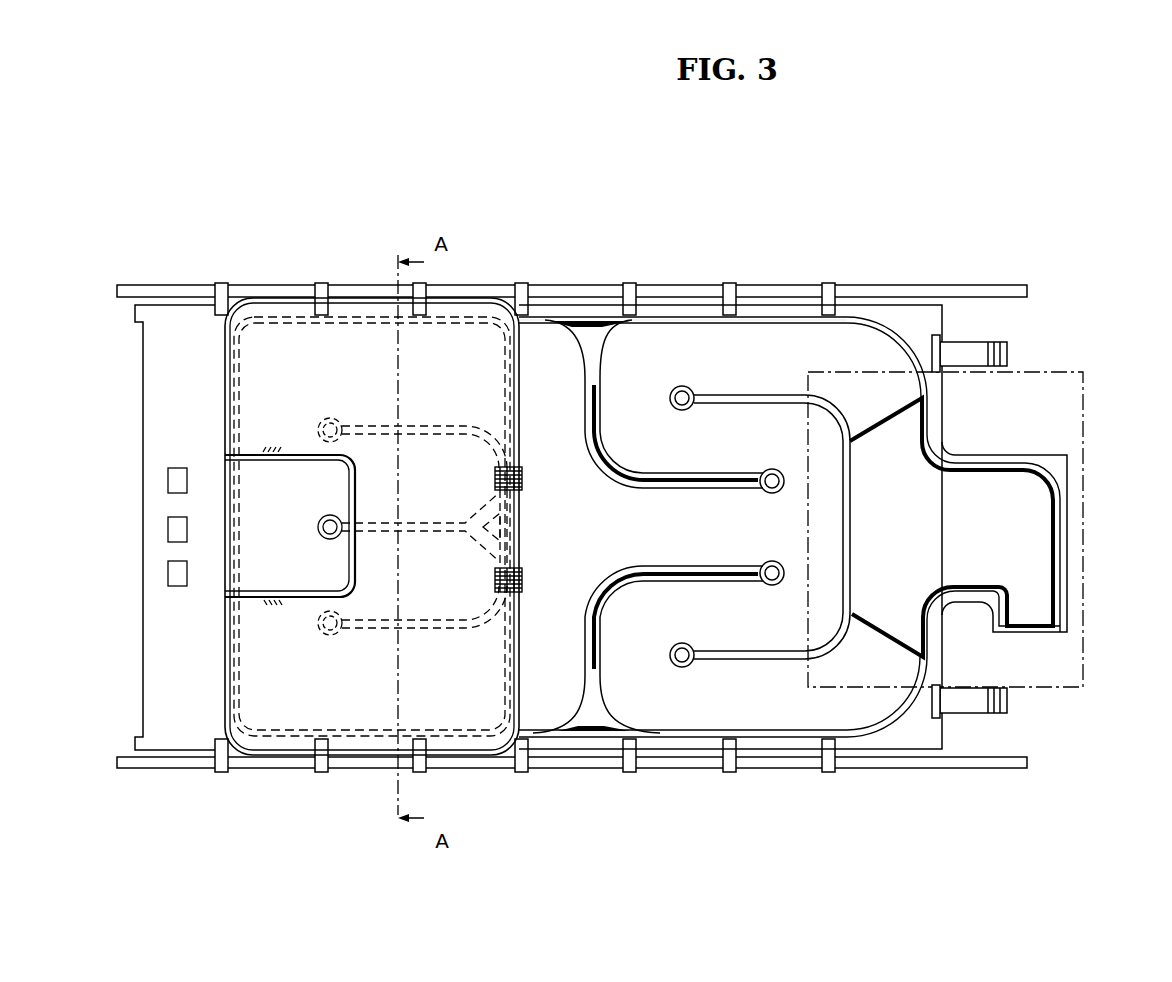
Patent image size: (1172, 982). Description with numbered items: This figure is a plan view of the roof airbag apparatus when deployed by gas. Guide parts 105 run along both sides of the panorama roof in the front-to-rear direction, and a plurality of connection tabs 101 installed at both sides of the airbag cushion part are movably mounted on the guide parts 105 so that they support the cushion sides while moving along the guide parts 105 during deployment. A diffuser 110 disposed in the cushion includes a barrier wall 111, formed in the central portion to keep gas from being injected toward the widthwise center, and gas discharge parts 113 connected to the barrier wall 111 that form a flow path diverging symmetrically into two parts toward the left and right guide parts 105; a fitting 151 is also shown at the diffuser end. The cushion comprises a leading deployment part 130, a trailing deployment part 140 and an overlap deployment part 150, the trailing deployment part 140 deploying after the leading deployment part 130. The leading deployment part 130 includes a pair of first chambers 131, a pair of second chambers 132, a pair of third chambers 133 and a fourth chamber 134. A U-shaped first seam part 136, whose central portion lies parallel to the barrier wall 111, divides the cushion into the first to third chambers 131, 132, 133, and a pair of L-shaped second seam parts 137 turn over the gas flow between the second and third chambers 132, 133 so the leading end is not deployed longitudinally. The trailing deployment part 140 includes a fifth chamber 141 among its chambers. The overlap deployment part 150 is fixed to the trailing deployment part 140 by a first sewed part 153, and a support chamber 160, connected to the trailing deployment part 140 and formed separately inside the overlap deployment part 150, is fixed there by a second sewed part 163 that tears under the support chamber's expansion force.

The connection tab 101 is at (828, 298).
The guide part 105 is at (990, 292).
The diffuser 110 is at (1012, 528).
The barrier wall 111 is at (853, 547).
The gas discharge part 113 is at (902, 435).
The leading deployment part 130 is at (747, 338).
The first chamber 131 is at (875, 668).
The second chamber 132 is at (765, 688).
The third chamber 133 is at (722, 618).
The fourth chamber 134 is at (670, 530).
The first seam part 136 is at (838, 412).
The second seam part 137 is at (682, 472).
The trailing deployment part 140 is at (579, 332).
The fifth chamber 141 is at (548, 420).
The overlap deployment part 150 is at (379, 330).
The fitting 151 is at (1005, 350).
The first sewed part 153 is at (503, 598).
The support chamber 160 is at (257, 560).
The second sewed part 163 is at (273, 602).